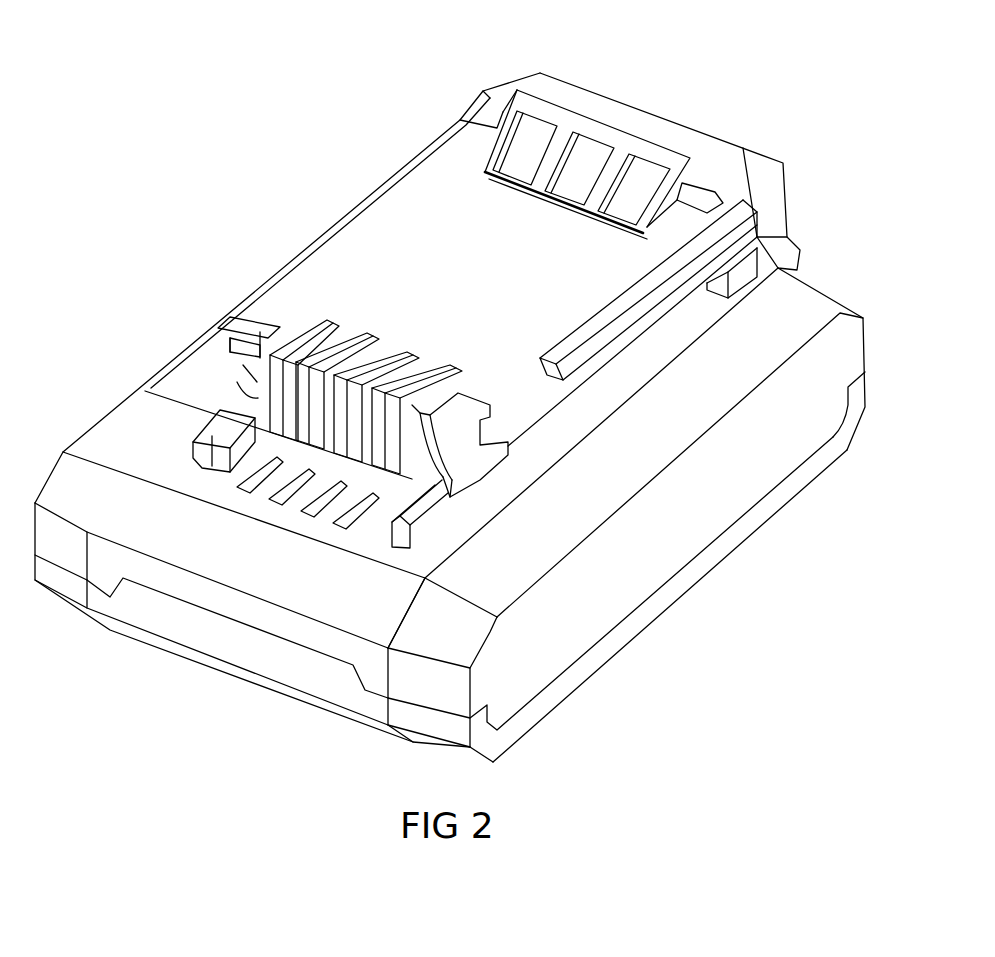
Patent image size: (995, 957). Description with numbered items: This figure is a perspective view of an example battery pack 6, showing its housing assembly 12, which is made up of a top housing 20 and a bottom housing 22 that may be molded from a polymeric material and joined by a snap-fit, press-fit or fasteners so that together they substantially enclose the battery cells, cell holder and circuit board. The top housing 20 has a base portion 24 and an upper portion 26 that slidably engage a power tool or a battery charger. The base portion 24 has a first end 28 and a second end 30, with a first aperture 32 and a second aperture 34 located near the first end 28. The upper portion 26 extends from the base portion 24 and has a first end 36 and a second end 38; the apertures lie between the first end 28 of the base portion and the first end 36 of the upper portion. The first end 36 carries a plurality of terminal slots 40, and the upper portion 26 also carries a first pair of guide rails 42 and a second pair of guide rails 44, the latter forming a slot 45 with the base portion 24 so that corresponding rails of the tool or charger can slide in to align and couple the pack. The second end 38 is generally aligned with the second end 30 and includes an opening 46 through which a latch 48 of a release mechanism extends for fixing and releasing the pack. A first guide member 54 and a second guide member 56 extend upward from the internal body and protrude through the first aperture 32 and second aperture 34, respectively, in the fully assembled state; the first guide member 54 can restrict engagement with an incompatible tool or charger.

The battery pack 6 is at (192, 160).
The housing assembly 12 is at (325, 192).
The top housing 20 is at (712, 544).
The bottom housing 22 is at (632, 627).
The base portion 24 is at (157, 453).
The upper portion 26 is at (318, 268).
The first end of the base portion 28 is at (183, 548).
The second end of the base portion 30 is at (813, 283).
The first aperture 32 is at (187, 467).
The second aperture 34 is at (393, 545).
The first end of the upper portion 36 is at (438, 502).
The second end of the upper portion 38 is at (688, 135).
The terminal slots 40 is at (330, 322).
The first pair of guide rails 42 is at (240, 318).
The second pair of guide rails 44 is at (237, 348).
The slot 45 is at (650, 358).
The opening 46 is at (480, 170).
The latch 48 is at (600, 125).
The first guide member 54 is at (213, 423).
The second guide member 56 is at (423, 523).